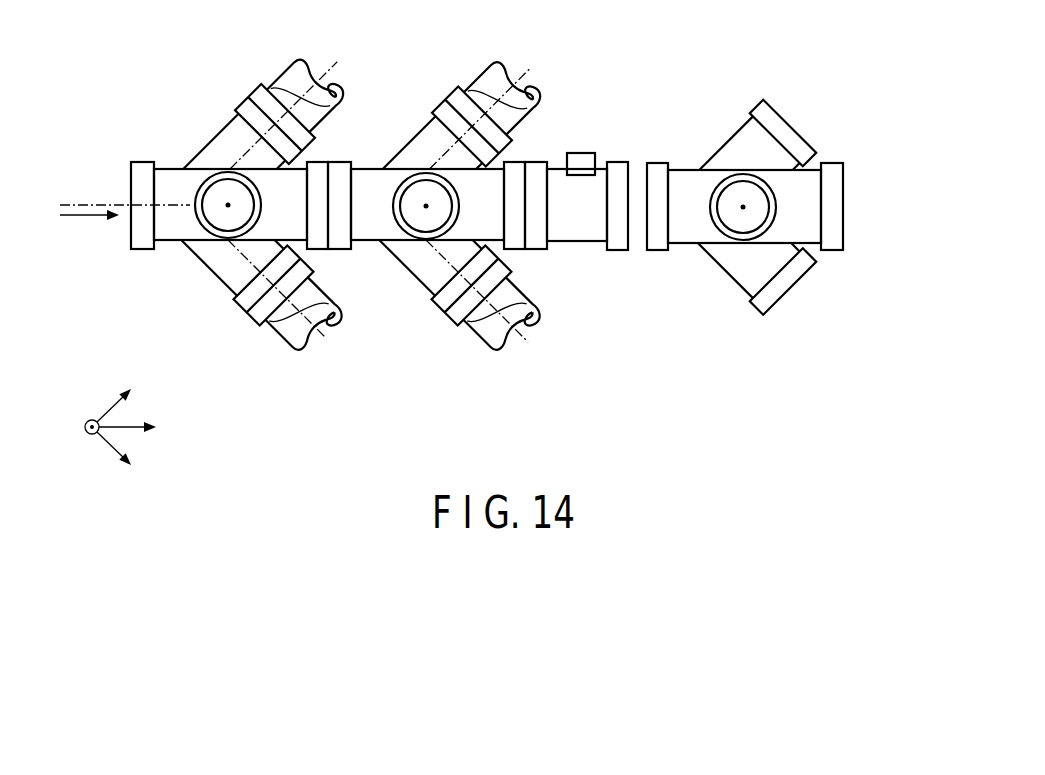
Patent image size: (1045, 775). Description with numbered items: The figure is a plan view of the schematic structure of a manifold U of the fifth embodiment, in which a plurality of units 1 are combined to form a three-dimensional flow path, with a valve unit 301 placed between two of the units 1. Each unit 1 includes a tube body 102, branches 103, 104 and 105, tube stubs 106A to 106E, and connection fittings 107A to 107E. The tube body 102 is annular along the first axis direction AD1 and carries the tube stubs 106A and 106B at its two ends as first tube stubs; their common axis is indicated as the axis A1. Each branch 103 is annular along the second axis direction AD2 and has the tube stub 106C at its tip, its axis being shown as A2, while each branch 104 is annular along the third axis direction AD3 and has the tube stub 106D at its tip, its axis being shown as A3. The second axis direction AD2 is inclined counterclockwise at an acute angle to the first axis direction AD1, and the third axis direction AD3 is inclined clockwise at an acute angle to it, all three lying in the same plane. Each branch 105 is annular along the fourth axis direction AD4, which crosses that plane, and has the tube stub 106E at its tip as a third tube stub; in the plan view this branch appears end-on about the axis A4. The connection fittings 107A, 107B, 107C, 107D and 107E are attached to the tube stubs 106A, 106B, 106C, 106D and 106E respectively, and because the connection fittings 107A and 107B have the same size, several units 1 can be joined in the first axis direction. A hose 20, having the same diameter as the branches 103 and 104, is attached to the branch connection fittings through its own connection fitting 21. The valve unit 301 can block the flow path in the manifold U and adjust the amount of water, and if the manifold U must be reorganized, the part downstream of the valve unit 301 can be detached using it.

The unit 1 is at (181, 152).
The hose 20 is at (306, 72).
The connection fitting 21 is at (256, 324).
The tube body 102 is at (178, 240).
The branch 103 is at (215, 150).
The branch 104 is at (230, 268).
The branch 105 is at (208, 226).
The tube stub 106A is at (160, 217).
The tube stub 106B is at (306, 243).
The tube stub 106C is at (322, 82).
The tube stub 106D is at (322, 316).
The tube stub 106E is at (231, 172).
The connection fitting 107A is at (138, 166).
The connection fitting 107B is at (316, 172).
The connection fitting 107C is at (274, 95).
The connection fitting 107D is at (243, 303).
The connection fitting 107E is at (253, 170).
The valve unit 301 is at (590, 203).
The manifold U is at (624, 74).
The main flow axis A1 is at (73, 204).
The upper branch axis A2 is at (337, 62).
The lower branch axis A3 is at (322, 340).
The rotation axis A4 is at (228, 205).
The first axis direction AD1 is at (149, 428).
The second axis direction AD2 is at (137, 397).
The third axis direction AD3 is at (137, 457).
The fourth axis direction AD4 is at (69, 428).